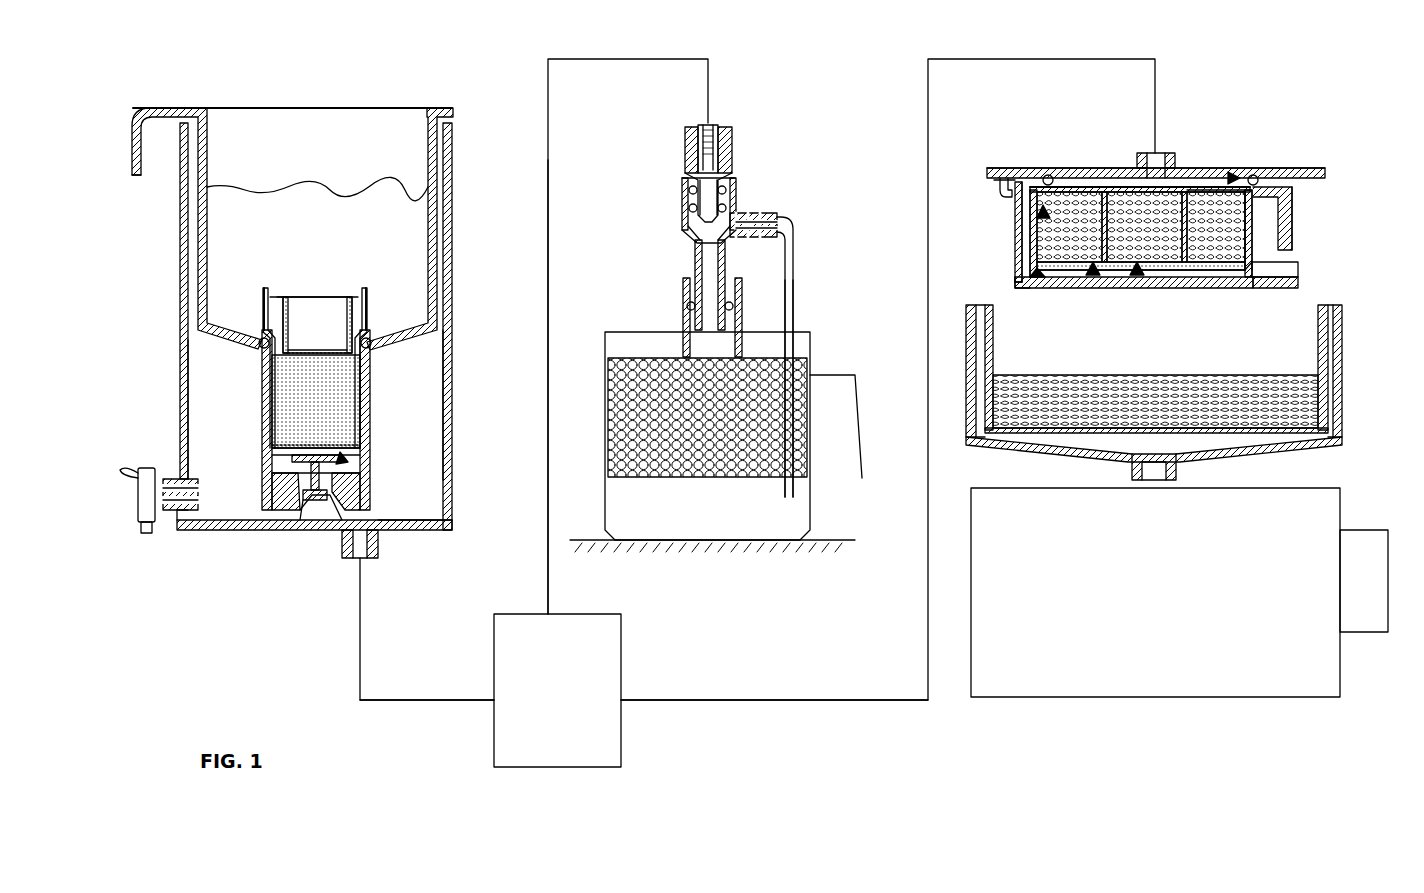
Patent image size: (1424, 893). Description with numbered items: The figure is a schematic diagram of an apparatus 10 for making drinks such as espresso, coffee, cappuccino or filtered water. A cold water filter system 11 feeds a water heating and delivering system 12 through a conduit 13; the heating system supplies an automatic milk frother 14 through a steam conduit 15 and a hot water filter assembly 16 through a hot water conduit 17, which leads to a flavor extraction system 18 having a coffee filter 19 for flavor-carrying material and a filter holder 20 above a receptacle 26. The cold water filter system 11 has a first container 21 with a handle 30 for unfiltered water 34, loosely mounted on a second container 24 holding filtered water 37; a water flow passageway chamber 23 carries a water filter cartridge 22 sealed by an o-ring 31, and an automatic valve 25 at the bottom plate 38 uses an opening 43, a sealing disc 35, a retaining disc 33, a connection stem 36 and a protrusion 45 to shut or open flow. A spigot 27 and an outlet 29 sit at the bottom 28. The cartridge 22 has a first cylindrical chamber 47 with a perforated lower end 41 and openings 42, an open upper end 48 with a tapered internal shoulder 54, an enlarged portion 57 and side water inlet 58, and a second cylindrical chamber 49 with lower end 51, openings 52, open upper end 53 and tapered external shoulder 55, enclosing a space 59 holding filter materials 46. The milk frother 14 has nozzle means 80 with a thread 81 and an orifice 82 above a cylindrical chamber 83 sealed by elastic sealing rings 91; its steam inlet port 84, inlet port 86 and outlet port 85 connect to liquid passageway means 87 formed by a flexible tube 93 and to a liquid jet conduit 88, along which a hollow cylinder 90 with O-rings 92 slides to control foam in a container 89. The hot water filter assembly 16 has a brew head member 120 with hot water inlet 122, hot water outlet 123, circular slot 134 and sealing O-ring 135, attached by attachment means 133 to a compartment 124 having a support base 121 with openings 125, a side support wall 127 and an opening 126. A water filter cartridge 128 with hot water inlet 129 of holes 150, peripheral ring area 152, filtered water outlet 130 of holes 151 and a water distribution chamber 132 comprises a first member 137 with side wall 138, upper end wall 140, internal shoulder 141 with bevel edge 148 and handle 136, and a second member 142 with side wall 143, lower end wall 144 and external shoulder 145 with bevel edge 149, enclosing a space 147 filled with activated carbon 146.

The apparatus 10 is at (511, 88).
The cold water filter system 11 is at (326, 86).
The water heating and delivering system 12 is at (557, 690).
The conduit 13 is at (428, 698).
The automatic milk frother 14 is at (795, 130).
The steam conduit 15 is at (550, 152).
The hot water filter assembly 16 is at (1335, 162).
The hot water conduit 17 is at (792, 698).
The flavor extraction system 18 is at (1340, 440).
The coffee filter 19 is at (1250, 378).
The filter holder 20 is at (1335, 462).
The first container 21 is at (210, 160).
The water filter cartridge 22 is at (372, 303).
The water flow passageway chamber 23 is at (368, 410).
The second container 24 is at (437, 256).
The automatic valve 25 is at (360, 482).
The receptacle 26 is at (1179, 592).
The spigot 27 is at (138, 486).
The bottom 28 is at (420, 531).
The outlet 29 is at (368, 560).
The handle 30 is at (135, 178).
The o-ring 31 is at (232, 325).
The retaining disc 33 is at (300, 498).
The unfiltered water 34 is at (405, 216).
The sealing disc 35 is at (293, 453).
The connection stem 36 is at (318, 466).
The filtered water 37 is at (418, 373).
The bottom plate 38 is at (272, 502).
The lower end 41 is at (332, 447).
The small openings 42 is at (345, 462).
The opening 43 is at (331, 500).
The protrusion 45 is at (304, 532).
The filter materials 46 is at (144, 405).
The first cylindrical chamber 47 is at (268, 356).
The open upper end 48 is at (300, 290).
The second cylindrical chamber 49 is at (340, 305).
The lower end 51 is at (331, 350).
The small openings 52 is at (302, 350).
The open upper end 53 is at (322, 296).
The tapered internal shoulder 54 is at (268, 292).
The tapered external shoulder 55 is at (283, 296).
The enlarged portion 57 is at (262, 318).
The side water inlet 58 is at (368, 322).
The space 59 is at (278, 428).
The nozzle means 80 is at (690, 140).
The thread 81 is at (717, 127).
The orifice 82 is at (684, 230).
The cylindrical chamber 83 is at (682, 186).
The steam inlet port 84 is at (728, 236).
The outlet port 85 is at (699, 250).
The inlet port 86 is at (745, 221).
The liquid passageway means 87 is at (797, 242).
The liquid jet conduit 88 is at (688, 258).
The container 89 is at (605, 362).
The hollow cylinder 90 is at (685, 300).
The elastic sealing rings 91 is at (730, 190).
The O-rings 92 is at (728, 306).
The flexible tube 93 is at (795, 288).
The brew head member 120 is at (1300, 170).
The support base 121 is at (1000, 300).
The hot water inlet 122 is at (1142, 160).
The hot water outlet 123 is at (1160, 154).
The compartment 124 is at (1315, 193).
The openings 125 is at (1181, 287).
The opening 126 is at (1295, 270).
The side support wall 127 is at (1015, 232).
The water filter cartridge 128 is at (1260, 258).
The hot water inlet 129 is at (1235, 176).
The filtered water outlet 130 is at (1086, 267).
The water distribution chamber 132 is at (1182, 186).
The attachment means 133 is at (990, 194).
The circular slot 134 is at (1045, 179).
The sealing O-ring 135 is at (1256, 176).
The handle 136 is at (1292, 213).
The first member 137 is at (1066, 194).
The side wall 138 is at (1028, 218).
The upper end wall 140 is at (1090, 190).
The internal shoulder 141 is at (1032, 272).
The second member 142 is at (1139, 272).
The side wall 143 is at (1171, 267).
The lower end wall 144 is at (1096, 272).
The external shoulder 145 is at (1226, 267).
The activated carbon 146 is at (1240, 230).
The space 147 is at (1250, 220).
The bevel edge 148 is at (1039, 276).
The bevel edge 149 is at (1265, 268).
The holes 150 is at (1215, 186).
The holes 151 is at (1056, 268).
The peripheral ring area 152 is at (1020, 186).